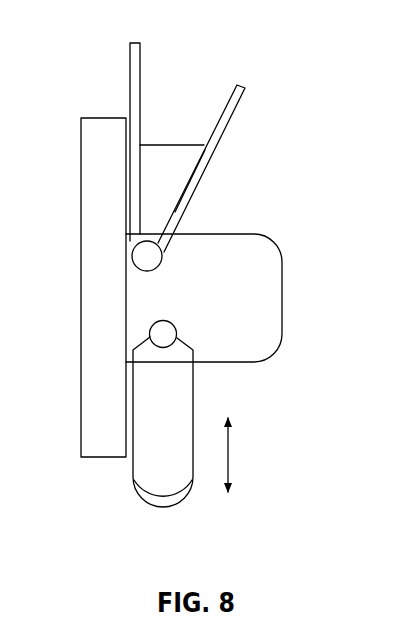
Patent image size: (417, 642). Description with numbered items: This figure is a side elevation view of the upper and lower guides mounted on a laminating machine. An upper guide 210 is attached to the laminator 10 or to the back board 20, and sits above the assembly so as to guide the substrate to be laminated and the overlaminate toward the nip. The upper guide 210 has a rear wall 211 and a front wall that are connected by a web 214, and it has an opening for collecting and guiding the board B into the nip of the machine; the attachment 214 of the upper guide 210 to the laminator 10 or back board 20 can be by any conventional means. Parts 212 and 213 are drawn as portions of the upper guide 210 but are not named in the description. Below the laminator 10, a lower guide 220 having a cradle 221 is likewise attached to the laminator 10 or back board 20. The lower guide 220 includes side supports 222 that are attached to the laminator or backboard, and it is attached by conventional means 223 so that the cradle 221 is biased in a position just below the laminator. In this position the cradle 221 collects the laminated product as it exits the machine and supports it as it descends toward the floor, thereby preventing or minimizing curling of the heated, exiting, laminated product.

The laminator 10 is at (283, 278).
The back board 20 is at (90, 165).
The board B is at (197, 65).
The upper guide 210 is at (207, 169).
The rear wall 211 is at (122, 63).
The tilted lever 212 is at (238, 110).
The lever arm 213 is at (173, 173).
The web 214 is at (127, 265).
The lower guide 220 is at (195, 429).
The cradle 221 is at (183, 508).
The side supports 222 is at (182, 408).
The conventional means 223 is at (148, 332).